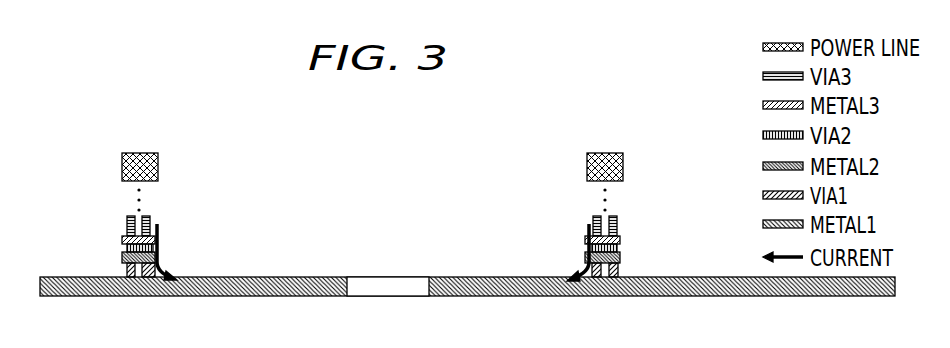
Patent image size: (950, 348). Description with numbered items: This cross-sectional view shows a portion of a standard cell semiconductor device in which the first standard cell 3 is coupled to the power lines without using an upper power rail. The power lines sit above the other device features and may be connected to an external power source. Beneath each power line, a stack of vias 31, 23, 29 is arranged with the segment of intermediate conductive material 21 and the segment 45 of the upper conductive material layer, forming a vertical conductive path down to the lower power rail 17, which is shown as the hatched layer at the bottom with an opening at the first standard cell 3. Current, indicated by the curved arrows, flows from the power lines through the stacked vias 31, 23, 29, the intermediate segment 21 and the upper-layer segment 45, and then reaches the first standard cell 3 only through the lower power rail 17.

The first standard cell 3 is at (389, 276).
The lower power rail 17 is at (478, 297).
The segment of intermediate conductive material 21 is at (620, 258).
The via 23 is at (122, 240).
The via 29 is at (122, 258).
The via 31 is at (620, 218).
The segment of upper conductive material layer 45 is at (620, 240).